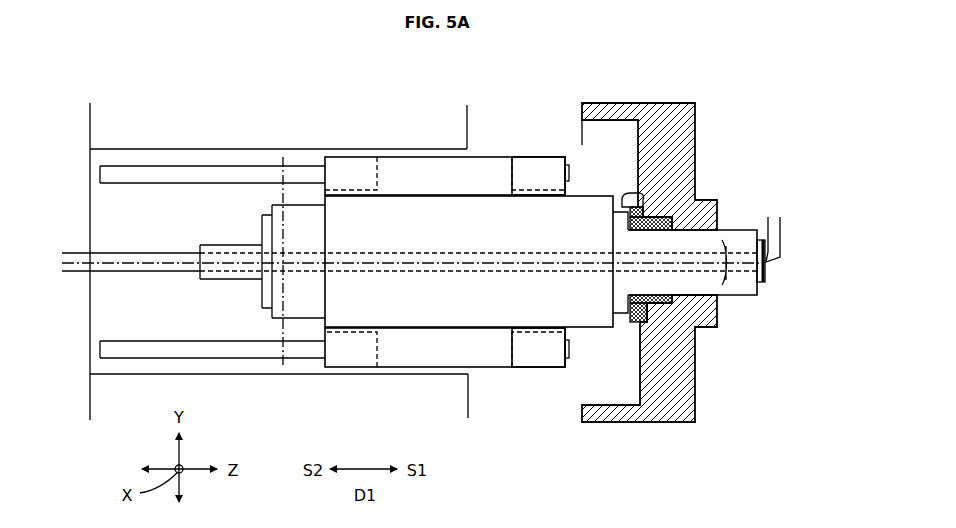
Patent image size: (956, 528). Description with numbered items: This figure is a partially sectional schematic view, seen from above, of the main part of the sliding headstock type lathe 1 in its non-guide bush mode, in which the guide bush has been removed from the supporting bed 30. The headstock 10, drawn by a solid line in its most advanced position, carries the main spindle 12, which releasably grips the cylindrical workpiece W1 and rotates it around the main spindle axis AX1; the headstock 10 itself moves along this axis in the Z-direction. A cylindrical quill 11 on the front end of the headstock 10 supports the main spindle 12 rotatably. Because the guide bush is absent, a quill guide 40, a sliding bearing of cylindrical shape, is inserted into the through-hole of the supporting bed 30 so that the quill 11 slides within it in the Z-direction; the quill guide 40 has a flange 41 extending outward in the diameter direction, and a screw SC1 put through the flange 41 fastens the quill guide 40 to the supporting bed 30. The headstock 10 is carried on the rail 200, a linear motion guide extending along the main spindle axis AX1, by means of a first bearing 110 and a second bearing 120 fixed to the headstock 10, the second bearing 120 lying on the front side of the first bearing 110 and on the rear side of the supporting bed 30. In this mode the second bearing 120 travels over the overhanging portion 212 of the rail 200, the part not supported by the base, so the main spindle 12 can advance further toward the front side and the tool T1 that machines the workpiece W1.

The sliding headstock type lathe 1 is at (124, 112).
The headstock 10 is at (388, 237).
The quill 11 is at (742, 230).
The main spindle 12 is at (768, 275).
The supporting bed 30 is at (695, 130).
The quill guide 40 is at (660, 307).
The flange 41 is at (650, 310).
The first bearing 110 is at (340, 157).
The second bearing 120 is at (527, 157).
The rail 200 is at (100, 167).
The overhanging portion 212 is at (570, 170).
The main spindle axis AX1 is at (70, 272).
The screw SC1 is at (637, 196).
The tool T1 is at (782, 243).
The workpiece W1 is at (770, 268).